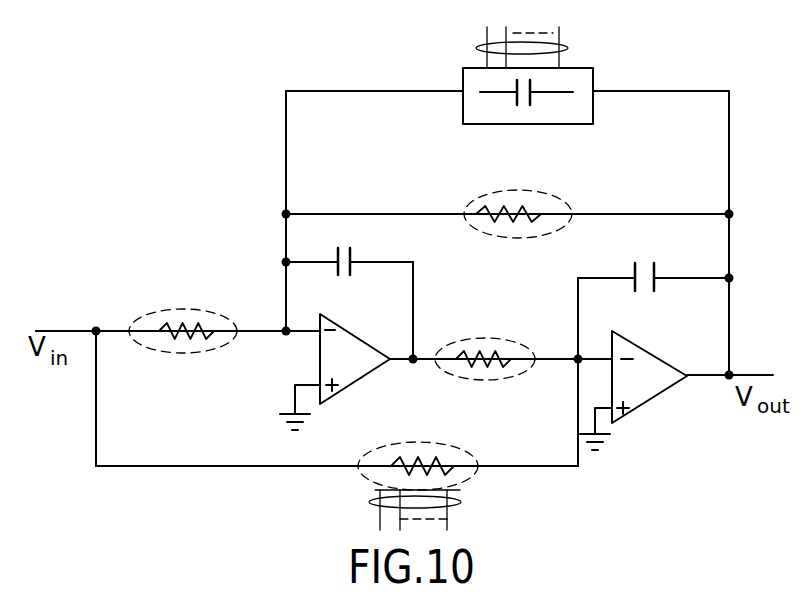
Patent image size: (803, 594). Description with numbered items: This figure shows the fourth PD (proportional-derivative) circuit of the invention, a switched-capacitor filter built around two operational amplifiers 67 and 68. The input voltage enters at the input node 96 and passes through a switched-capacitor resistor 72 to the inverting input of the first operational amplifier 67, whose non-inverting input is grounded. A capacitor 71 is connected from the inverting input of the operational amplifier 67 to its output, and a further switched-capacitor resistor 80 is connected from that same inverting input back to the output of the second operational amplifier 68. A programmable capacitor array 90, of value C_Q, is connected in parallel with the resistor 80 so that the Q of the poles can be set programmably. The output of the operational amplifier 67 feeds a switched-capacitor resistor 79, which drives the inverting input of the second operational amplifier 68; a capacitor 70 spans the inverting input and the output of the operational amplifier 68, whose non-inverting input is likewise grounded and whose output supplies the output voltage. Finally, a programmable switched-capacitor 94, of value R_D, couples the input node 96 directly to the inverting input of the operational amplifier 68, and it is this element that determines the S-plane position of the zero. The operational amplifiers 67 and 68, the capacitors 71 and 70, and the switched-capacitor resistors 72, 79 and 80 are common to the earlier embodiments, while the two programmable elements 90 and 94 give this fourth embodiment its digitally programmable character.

The programmable capacitor array 90 is at (463, 68).
The switched-capacitor resistor 80 is at (488, 190).
The capacitor 70 is at (647, 264).
The capacitor 71 is at (346, 250).
The switched-capacitor resistor 72 is at (190, 310).
The switched-capacitor resistor 79 is at (507, 338).
The operational amplifier 67 is at (352, 365).
The operational amplifier 68 is at (647, 391).
The programmable switched-capacitor 94 is at (418, 441).
The input terminal 96 is at (71, 330).